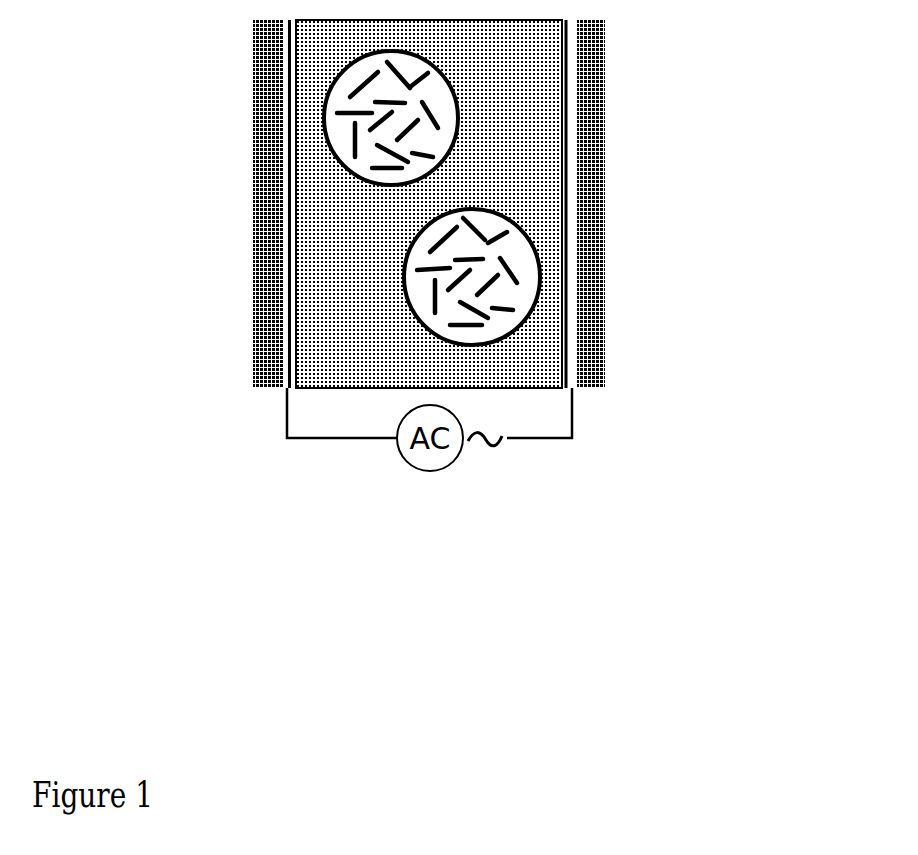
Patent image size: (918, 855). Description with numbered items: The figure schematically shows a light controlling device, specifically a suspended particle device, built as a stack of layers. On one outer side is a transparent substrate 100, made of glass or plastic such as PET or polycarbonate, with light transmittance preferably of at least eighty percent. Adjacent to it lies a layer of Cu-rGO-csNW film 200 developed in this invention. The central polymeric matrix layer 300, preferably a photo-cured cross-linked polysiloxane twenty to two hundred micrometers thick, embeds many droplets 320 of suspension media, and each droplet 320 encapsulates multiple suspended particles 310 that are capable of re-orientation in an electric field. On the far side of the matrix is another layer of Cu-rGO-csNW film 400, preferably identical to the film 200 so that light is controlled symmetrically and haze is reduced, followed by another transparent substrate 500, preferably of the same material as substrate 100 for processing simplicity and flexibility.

The transparent substrate 100 is at (268, 61).
The Cu-rGO-csNW film layer 200 is at (290, 207).
The polymeric matrix layer 300 is at (510, 179).
The suspended particles 310 is at (488, 247).
The droplets 320 is at (532, 307).
The Cu-rGO-csNW film layer 400 is at (575, 117).
The transparent substrate 500 is at (590, 34).